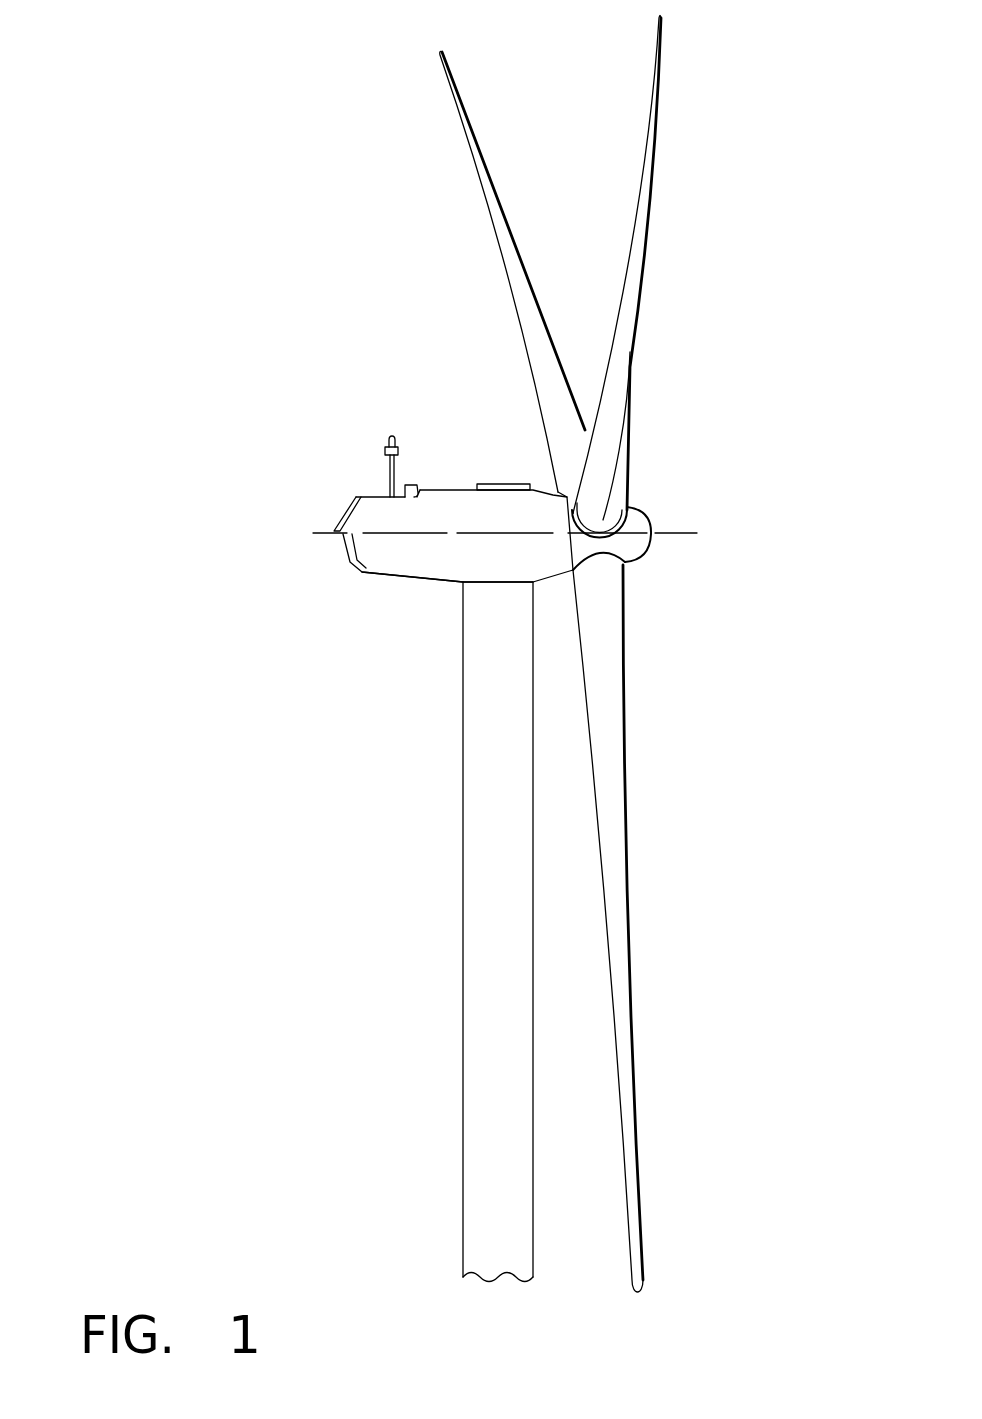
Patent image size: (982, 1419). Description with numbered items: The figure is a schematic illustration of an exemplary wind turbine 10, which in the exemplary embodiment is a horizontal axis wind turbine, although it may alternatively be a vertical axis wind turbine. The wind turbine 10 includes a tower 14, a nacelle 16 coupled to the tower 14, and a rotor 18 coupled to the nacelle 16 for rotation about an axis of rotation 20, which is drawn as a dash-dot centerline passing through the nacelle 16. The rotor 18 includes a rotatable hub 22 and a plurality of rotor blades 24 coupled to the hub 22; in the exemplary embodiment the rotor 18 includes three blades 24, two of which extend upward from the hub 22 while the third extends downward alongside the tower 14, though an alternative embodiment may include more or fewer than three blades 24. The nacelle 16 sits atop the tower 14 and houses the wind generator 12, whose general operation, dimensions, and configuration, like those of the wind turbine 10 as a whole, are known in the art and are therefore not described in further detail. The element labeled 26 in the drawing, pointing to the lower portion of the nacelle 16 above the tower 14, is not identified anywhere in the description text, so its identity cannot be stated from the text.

The wind turbine 10 is at (298, 267).
The wind generator 12 is at (470, 460).
The tower 14 is at (533, 1170).
The nacelle 16 is at (377, 495).
The rotor 18 is at (748, 242).
The axis of rotation 20 is at (683, 532).
The rotatable hub 22 is at (650, 535).
The rotor blades 24 is at (453, 110).
The yaw system 26 is at (410, 562).